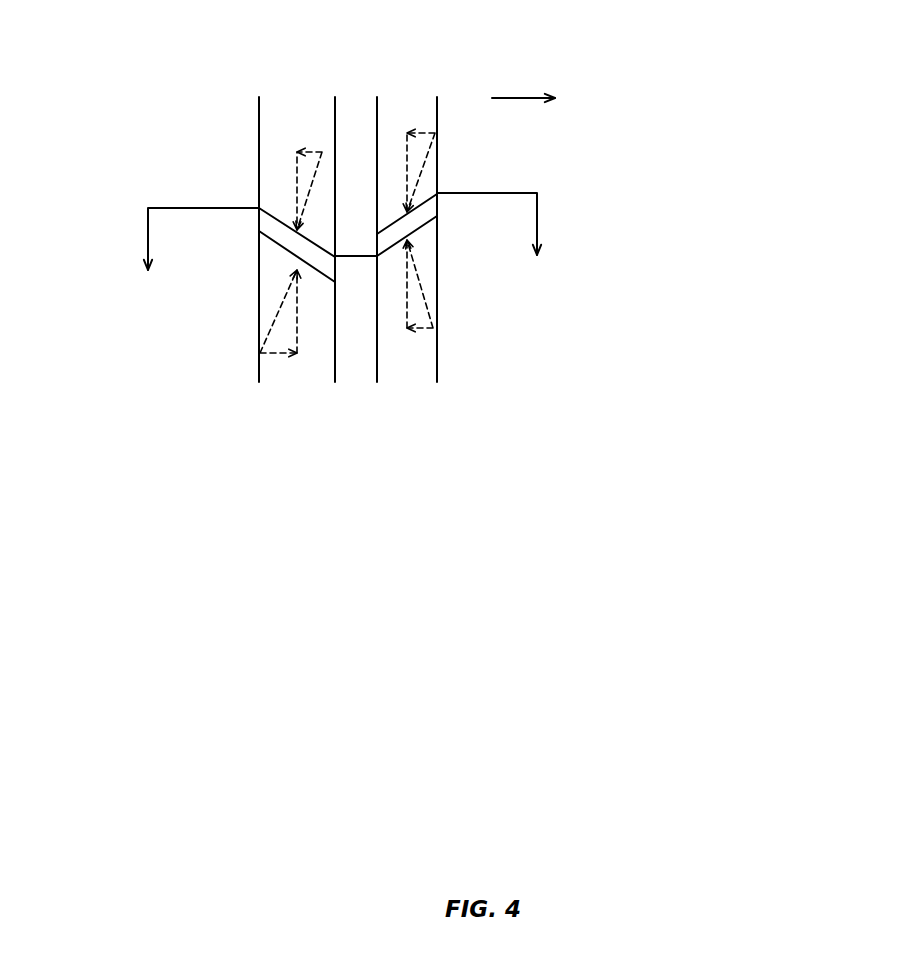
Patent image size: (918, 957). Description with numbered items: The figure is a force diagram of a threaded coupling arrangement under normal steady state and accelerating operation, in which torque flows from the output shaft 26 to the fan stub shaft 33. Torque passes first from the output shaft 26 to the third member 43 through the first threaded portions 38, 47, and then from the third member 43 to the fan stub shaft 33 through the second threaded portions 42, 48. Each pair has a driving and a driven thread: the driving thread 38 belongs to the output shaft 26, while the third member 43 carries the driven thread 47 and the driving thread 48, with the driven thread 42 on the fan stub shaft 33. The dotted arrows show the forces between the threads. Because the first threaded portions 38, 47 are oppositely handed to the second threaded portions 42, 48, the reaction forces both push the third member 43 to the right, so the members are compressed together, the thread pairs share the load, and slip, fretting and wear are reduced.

The output shaft 26 is at (422, 360).
The fan stub shaft 33 is at (298, 358).
The first threaded portion 38 is at (389, 228).
The second threaded portion 42 is at (283, 246).
The third member 43 is at (355, 258).
The first threaded portion 47 is at (420, 226).
The second threaded portion 48 is at (277, 220).